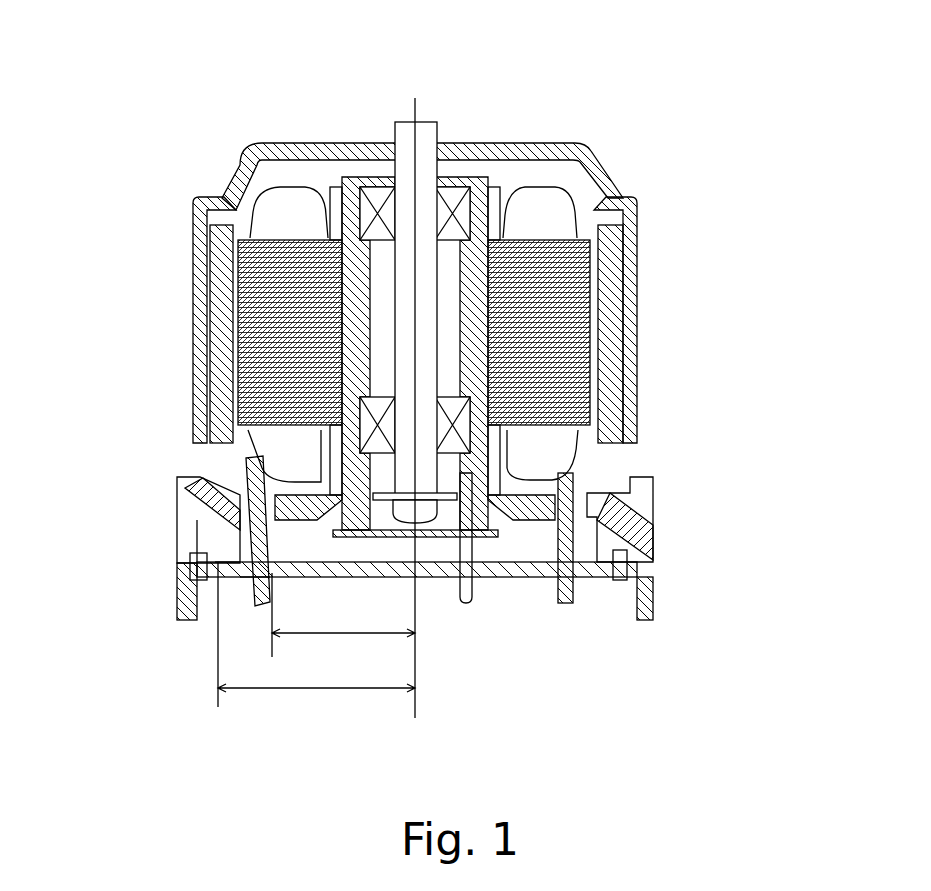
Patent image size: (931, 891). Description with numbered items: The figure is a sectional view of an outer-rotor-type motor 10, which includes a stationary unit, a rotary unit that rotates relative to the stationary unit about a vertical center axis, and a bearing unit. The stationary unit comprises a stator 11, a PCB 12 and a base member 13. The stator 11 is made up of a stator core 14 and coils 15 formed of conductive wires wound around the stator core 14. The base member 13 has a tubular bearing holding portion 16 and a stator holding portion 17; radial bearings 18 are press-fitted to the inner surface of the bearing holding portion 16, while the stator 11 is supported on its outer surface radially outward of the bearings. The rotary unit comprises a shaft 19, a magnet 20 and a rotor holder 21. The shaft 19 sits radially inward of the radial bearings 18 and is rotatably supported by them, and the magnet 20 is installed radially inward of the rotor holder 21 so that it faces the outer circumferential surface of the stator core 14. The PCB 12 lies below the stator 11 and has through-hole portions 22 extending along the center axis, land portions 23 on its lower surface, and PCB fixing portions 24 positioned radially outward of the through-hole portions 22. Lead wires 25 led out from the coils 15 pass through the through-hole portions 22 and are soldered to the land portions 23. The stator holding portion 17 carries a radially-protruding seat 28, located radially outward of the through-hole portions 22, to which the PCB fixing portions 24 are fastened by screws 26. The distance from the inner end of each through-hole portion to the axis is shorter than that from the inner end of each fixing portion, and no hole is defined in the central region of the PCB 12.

The motor 10 is at (435, 371).
The stator 11 is at (516, 323).
The PCB 12 is at (527, 577).
The base member 13 is at (538, 398).
The stator core 14 is at (560, 223).
The coils 15 is at (560, 307).
The bearing holding portion 16 is at (473, 383).
The stator holding portion 17 is at (637, 500).
The radial bearings 18 is at (360, 420).
The shaft 19 is at (395, 138).
The magnet 20 is at (220, 243).
The rotor holder 21 is at (220, 188).
The through-hole portions 22 is at (253, 573).
The land portions 23 is at (253, 580).
The PCB fixing portions 24 is at (235, 578).
The lead wires 25 is at (257, 507).
The screws 26 is at (207, 580).
The seat 28 is at (602, 537).